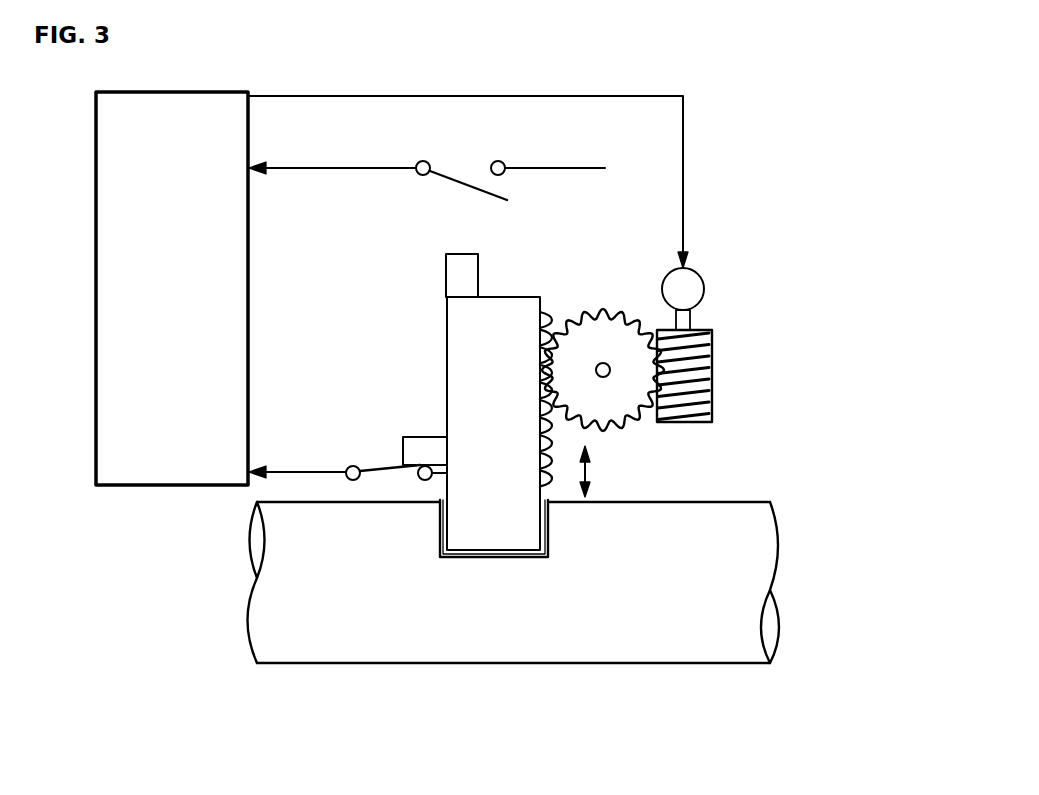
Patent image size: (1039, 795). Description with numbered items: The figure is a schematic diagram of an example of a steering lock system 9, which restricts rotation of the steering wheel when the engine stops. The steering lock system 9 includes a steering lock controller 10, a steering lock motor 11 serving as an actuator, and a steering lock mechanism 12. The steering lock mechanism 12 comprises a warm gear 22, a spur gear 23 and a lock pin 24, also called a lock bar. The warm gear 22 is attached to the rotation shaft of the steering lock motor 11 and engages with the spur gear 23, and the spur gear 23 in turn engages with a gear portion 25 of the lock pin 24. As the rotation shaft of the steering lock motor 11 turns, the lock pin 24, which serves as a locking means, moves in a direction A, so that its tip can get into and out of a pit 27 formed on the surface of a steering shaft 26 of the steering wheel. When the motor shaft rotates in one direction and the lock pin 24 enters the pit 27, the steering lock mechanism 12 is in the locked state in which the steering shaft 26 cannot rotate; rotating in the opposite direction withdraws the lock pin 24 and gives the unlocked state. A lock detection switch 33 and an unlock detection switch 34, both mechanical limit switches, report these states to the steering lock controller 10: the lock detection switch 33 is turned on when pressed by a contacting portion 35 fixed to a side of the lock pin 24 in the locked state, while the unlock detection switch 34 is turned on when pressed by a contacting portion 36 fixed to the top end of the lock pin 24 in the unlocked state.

The steering lock system 9 is at (784, 120).
The steering lock controller 10 is at (178, 487).
The steering lock motor 11 is at (705, 290).
The steering lock mechanism 12 is at (604, 222).
The warm gear 22 is at (715, 352).
The spur gear 23 is at (630, 426).
The lock pin 24 is at (527, 286).
The gear portion 25 is at (555, 485).
The steering shaft 26 is at (768, 538).
The pit 27 is at (503, 550).
The lock detection switch 33 is at (378, 470).
The unlock detection switch 34 is at (472, 183).
The contacting portion 35 is at (400, 440).
The contacting portion 36 is at (462, 252).
The direction A is at (590, 470).